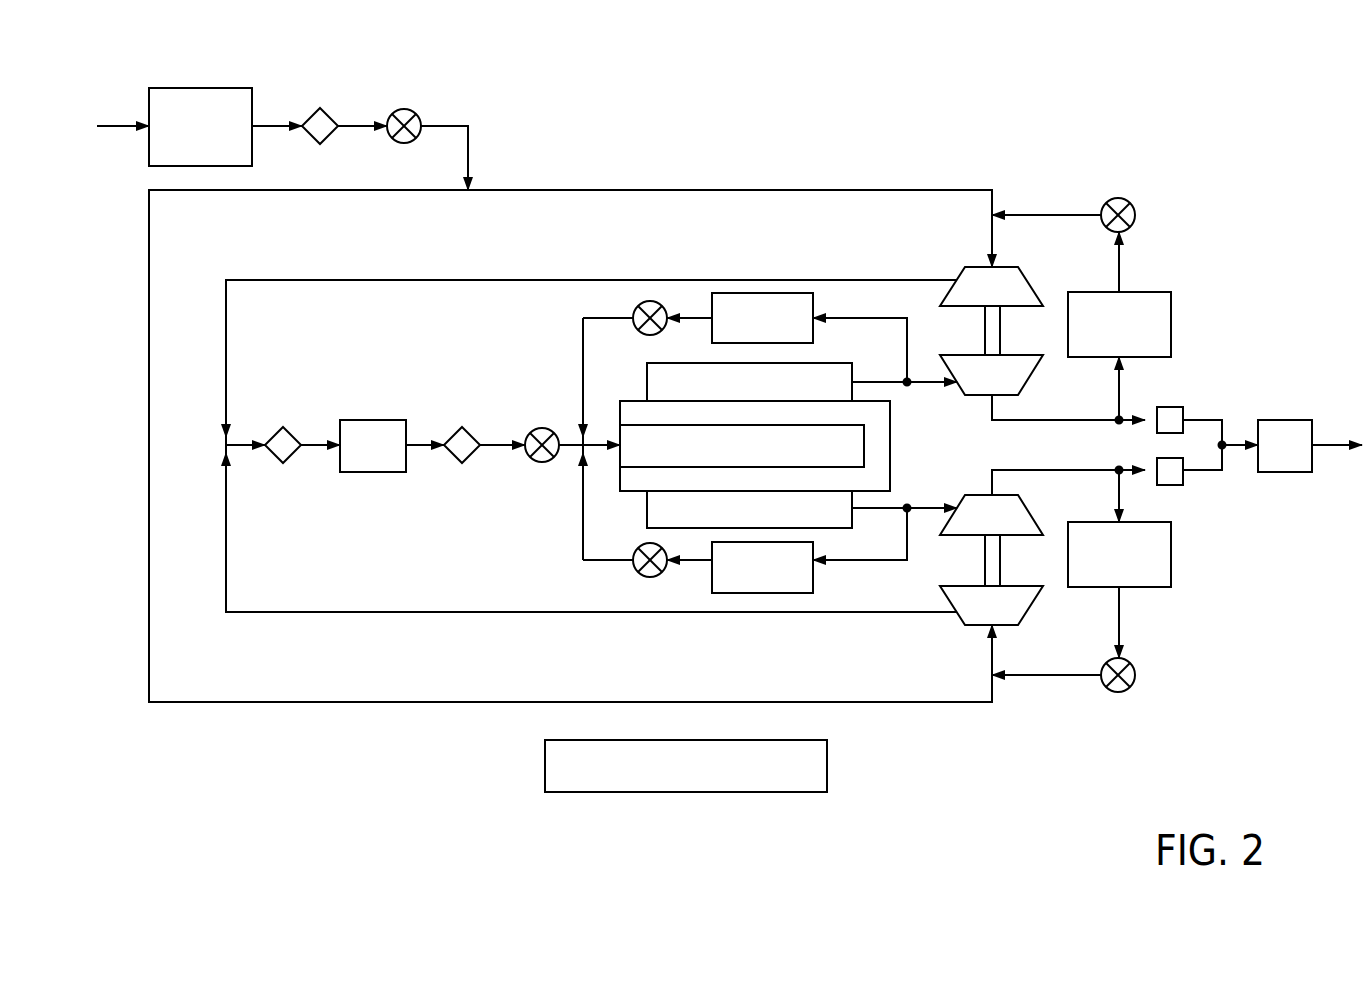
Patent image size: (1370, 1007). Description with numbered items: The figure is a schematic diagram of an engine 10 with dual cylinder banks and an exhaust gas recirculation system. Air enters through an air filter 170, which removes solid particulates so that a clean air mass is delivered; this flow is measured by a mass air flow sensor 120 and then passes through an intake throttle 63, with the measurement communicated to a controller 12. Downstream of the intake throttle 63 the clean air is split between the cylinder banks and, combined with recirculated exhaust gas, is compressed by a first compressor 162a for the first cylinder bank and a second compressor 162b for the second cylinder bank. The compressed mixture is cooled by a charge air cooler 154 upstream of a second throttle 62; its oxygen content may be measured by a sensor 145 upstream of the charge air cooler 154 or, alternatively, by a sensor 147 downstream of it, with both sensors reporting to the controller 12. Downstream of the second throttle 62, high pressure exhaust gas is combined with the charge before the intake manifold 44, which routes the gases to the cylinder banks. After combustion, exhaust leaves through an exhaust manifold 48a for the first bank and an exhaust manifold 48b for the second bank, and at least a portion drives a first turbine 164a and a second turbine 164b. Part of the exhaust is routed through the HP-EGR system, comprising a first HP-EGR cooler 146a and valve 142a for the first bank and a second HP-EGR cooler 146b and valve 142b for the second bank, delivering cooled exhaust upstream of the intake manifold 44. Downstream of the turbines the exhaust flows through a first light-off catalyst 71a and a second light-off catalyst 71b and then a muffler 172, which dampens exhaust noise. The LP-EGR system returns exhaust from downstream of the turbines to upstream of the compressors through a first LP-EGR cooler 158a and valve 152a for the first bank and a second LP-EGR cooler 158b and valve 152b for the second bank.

The engine 10 is at (1262, 178).
The controller 12 is at (788, 777).
The intake manifold 44 is at (693, 456).
The exhaust manifold 48a is at (689, 391).
The exhaust manifold 48b is at (689, 520).
The second throttle 62 is at (535, 430).
The intake throttle 63 is at (409, 112).
The first light-off catalyst 71a is at (1172, 407).
The second light-off catalyst 71b is at (1172, 485).
The mass air flow sensor 120 is at (323, 113).
The valve 142a is at (640, 306).
The valve 142b is at (642, 573).
The sensor 145 is at (283, 427).
The first HP-EGR cooler 146a is at (813, 302).
The second HP-EGR cooler 146b is at (813, 582).
The sensor 147 is at (462, 427).
The valve 152a is at (1131, 208).
The valve 152b is at (1131, 668).
The charge air cooler 154 is at (388, 420).
The first LP-EGR cooler 158a is at (1171, 325).
The second LP-EGR cooler 158b is at (1171, 555).
The first compressor 162a is at (973, 301).
The second compressor 162b is at (973, 618).
The first turbine 164a is at (973, 390).
The second turbine 164b is at (973, 528).
The air filter 170 is at (173, 88).
The muffler 172 is at (1272, 420).